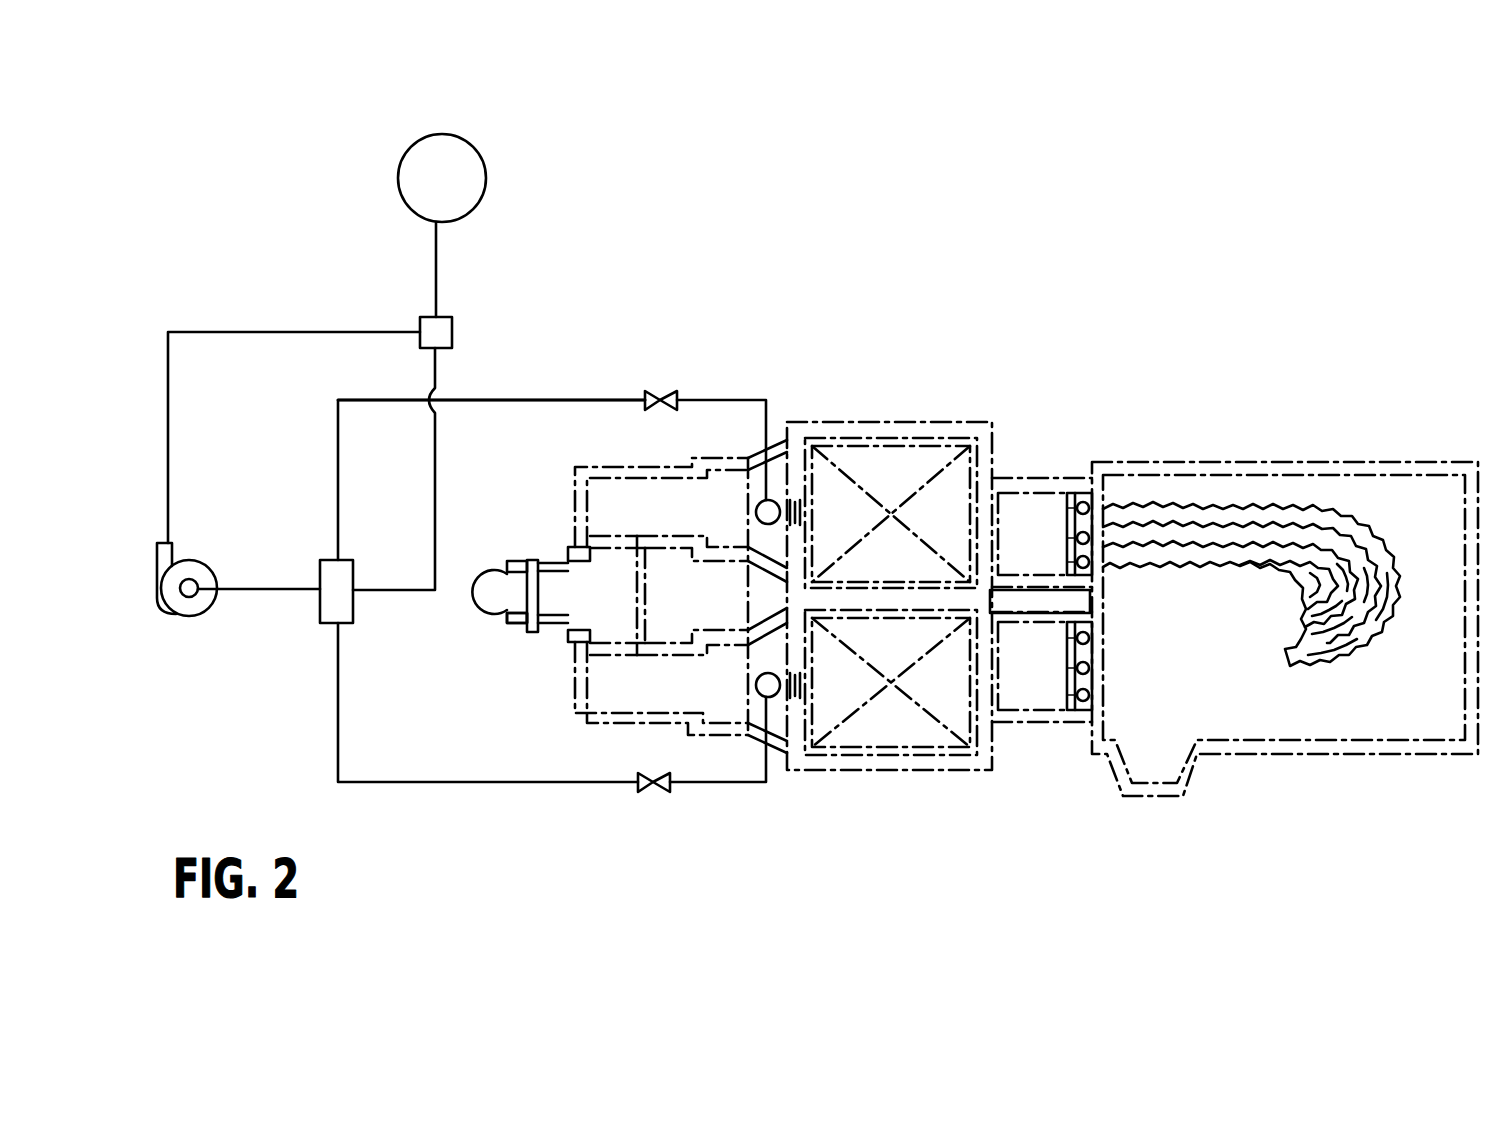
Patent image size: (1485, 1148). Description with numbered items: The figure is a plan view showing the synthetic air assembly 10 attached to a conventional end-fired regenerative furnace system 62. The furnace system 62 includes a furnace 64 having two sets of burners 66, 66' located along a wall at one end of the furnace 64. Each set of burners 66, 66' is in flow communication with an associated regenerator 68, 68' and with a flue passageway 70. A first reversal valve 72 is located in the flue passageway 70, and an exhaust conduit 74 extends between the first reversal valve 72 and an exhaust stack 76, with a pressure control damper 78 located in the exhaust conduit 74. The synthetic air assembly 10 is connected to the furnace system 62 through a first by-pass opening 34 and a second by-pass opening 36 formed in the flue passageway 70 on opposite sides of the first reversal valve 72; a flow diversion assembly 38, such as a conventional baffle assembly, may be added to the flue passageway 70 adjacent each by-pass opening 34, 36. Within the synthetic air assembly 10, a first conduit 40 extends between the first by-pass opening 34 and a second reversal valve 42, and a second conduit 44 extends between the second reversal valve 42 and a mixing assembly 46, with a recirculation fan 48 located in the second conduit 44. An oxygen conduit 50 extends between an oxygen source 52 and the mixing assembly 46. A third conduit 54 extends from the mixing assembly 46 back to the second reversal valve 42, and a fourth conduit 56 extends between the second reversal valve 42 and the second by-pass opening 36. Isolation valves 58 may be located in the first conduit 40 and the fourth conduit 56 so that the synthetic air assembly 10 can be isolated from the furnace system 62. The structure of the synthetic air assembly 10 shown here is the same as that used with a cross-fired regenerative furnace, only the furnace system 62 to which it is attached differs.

The synthetic air assembly 10 is at (276, 188).
The first by-pass opening 34 is at (756, 685).
The second by-pass opening 36 is at (756, 512).
The flow diversion assembly 38 is at (793, 497).
The first conduit 40 is at (425, 786).
The second reversal valve 42 is at (318, 616).
The second conduit 44 is at (302, 332).
The mixing assembly 46 is at (452, 318).
The recirculation fan 48 is at (180, 618).
The oxygen conduit 50 is at (437, 232).
The oxygen source 52 is at (420, 198).
The third conduit 54 is at (435, 468).
The fourth conduit 56 is at (513, 400).
The isolation valves 58 is at (660, 391).
The end-fired regenerative furnace system 62 is at (1104, 310).
The furnace 64 is at (1365, 497).
The set of burners 66 is at (1041, 505).
The set of burners 66' is at (1042, 712).
The regenerator 68 is at (891, 460).
The regenerator 68' is at (891, 737).
The flue passageway 70 is at (603, 497).
The first reversal valve 72 is at (600, 612).
The exhaust conduit 74 is at (526, 558).
The exhaust stack 76 is at (492, 576).
The pressure control damper 78 is at (528, 636).